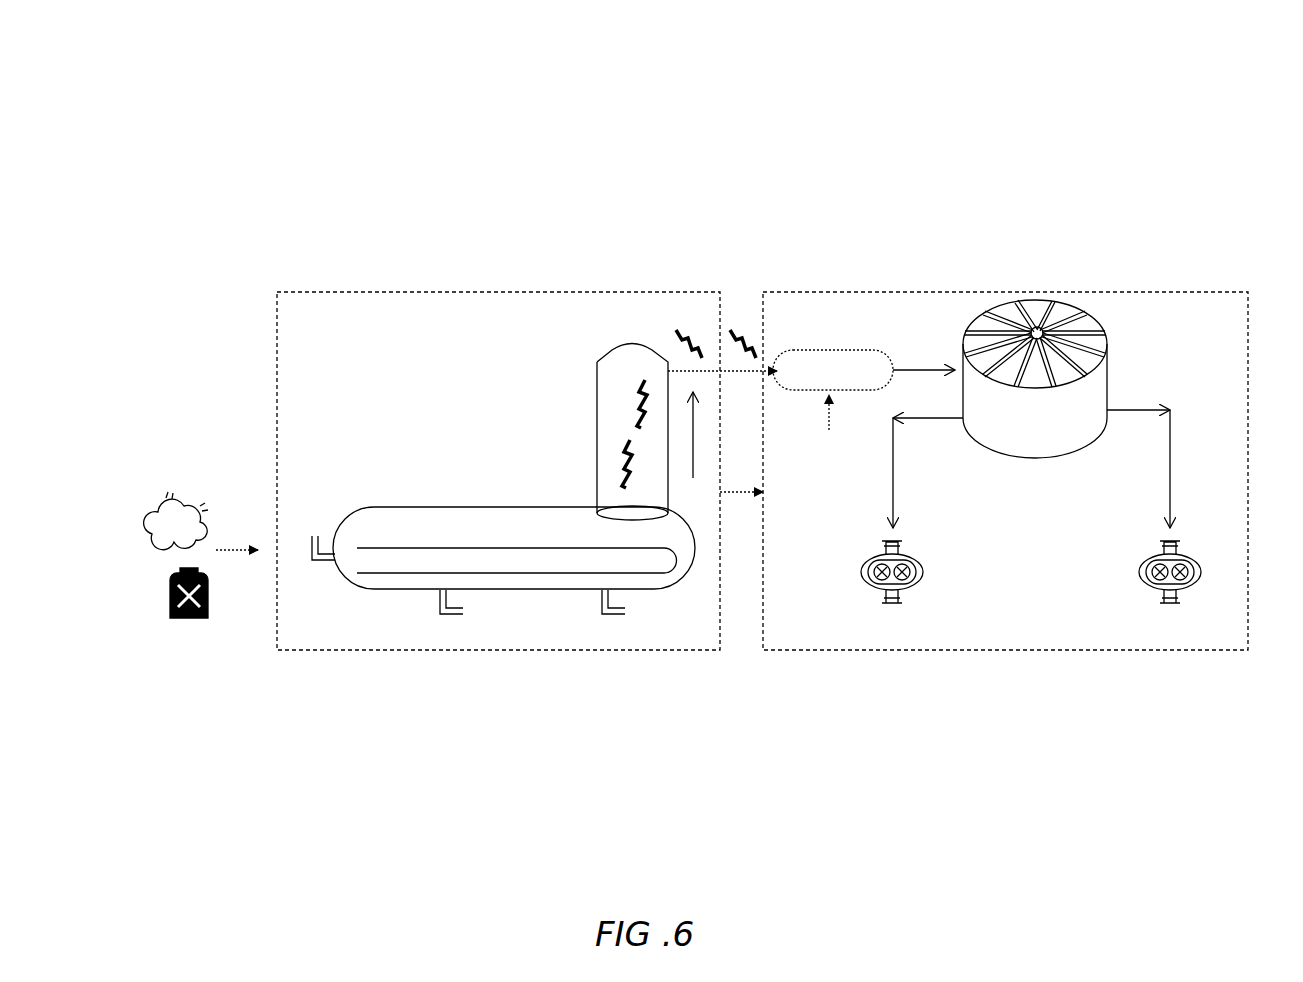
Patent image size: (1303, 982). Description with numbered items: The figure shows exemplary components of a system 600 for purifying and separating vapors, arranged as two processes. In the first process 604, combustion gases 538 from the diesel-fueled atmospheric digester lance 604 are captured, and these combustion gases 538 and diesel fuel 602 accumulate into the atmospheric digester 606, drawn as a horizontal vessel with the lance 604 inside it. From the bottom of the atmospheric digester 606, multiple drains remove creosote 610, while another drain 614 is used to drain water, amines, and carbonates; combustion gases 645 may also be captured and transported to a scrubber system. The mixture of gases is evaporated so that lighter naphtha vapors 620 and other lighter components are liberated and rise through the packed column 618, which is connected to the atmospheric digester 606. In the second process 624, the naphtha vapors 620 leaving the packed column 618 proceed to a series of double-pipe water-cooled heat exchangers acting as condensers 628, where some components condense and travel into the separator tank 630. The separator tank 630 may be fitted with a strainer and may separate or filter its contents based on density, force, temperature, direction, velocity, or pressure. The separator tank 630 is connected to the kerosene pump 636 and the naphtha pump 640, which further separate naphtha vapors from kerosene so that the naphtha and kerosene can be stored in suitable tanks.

The system 600 is at (1167, 86).
The combustion gases 538 is at (127, 527).
The diesel fuel 602 is at (130, 612).
The atmospheric digester lance 604 is at (502, 258).
The atmospheric digester 606 is at (526, 540).
The combustion gases 645 is at (335, 524).
The creosote drain 610 is at (509, 622).
The drain 614 is at (671, 622).
The packed column 618 is at (585, 424).
The naphtha vapors 620 is at (668, 331).
The process 624 is at (1042, 247).
The condensers 628 is at (851, 382).
The separator tank 630 is at (1054, 430).
The kerosene pump 636 is at (911, 633).
The naphtha pump 640 is at (1189, 633).